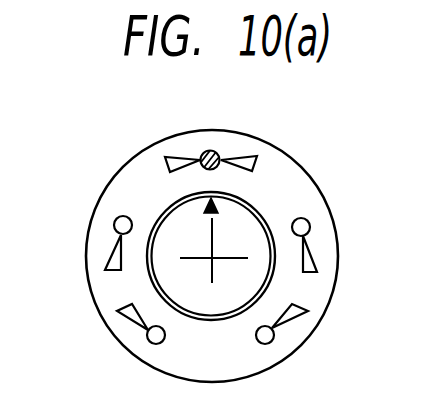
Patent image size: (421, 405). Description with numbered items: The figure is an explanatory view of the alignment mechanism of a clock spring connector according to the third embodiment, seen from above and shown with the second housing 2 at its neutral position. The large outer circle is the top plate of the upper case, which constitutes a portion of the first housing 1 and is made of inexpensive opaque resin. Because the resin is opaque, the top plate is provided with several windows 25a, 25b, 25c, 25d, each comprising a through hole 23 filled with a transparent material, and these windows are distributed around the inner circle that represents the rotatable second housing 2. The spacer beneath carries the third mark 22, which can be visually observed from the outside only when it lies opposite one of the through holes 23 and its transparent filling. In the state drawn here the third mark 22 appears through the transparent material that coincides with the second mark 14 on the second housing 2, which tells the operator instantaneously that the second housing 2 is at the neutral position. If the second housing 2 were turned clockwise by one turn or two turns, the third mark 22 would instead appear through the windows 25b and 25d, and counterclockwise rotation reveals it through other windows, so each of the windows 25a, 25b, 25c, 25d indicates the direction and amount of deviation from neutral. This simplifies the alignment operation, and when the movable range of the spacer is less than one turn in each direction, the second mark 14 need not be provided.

The first housing 1 is at (118, 170).
The second housing 2 is at (167, 270).
The second mark 14 is at (218, 207).
The third mark 22 is at (216, 152).
The through hole 23 is at (201, 156).
The window 25a is at (310, 227).
The window 25b is at (272, 342).
The window 25c is at (147, 338).
The window 25d is at (114, 224).